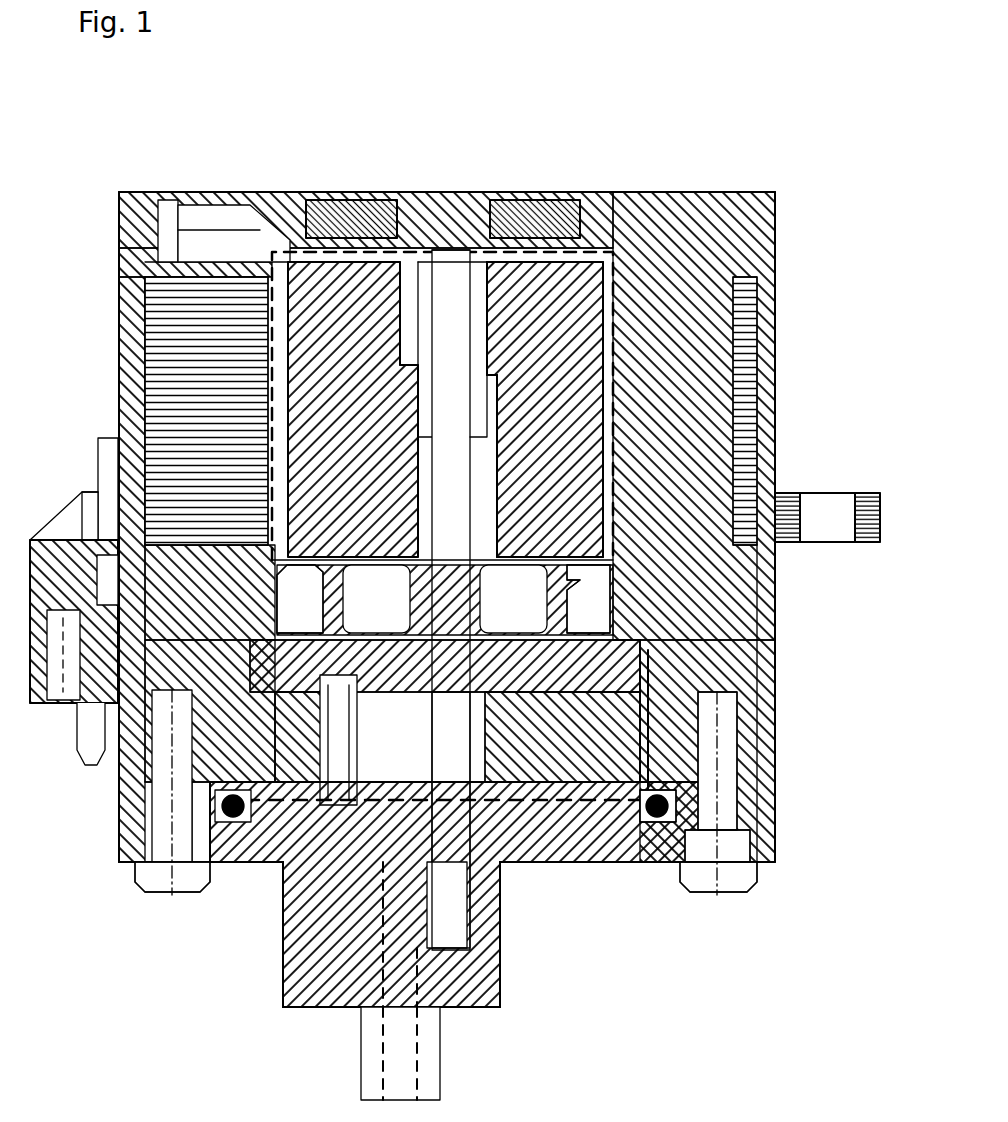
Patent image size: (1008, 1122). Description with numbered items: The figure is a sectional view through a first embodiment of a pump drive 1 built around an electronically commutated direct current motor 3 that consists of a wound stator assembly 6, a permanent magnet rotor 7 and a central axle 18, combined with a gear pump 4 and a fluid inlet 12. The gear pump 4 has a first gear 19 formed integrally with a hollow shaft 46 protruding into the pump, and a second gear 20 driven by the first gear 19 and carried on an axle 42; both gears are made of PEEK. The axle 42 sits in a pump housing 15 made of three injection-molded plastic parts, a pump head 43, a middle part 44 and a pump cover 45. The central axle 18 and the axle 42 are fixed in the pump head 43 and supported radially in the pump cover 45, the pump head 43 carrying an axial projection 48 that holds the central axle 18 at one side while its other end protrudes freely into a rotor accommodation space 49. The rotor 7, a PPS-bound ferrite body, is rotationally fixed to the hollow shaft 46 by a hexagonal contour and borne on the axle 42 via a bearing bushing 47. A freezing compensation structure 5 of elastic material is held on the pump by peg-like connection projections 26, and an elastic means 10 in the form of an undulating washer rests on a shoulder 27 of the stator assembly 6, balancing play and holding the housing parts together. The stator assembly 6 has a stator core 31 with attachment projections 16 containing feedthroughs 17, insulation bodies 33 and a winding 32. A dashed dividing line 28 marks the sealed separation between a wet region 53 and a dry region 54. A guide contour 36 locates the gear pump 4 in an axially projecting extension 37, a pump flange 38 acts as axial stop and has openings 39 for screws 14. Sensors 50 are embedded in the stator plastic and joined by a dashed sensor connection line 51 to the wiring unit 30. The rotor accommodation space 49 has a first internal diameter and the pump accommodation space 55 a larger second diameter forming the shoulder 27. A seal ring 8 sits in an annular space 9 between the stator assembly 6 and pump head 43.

The pump drive 1 is at (714, 80).
The electronically commutated direct current motor 3 is at (780, 350).
The gear pump 4 is at (605, 872).
The freezing compensation structure 5 is at (442, 597).
The wound stator assembly 6 is at (120, 302).
The permanent magnet rotor 7 is at (445, 409).
The seal ring 8 is at (660, 818).
The annular space 9 is at (700, 818).
The elastic means 10 is at (775, 637).
The fluid inlet 12 is at (360, 1085).
The screws 14 is at (292, 196).
The pump housing 15 is at (256, 876).
The attachment projections 16 is at (866, 512).
The feedthrough 17 is at (830, 512).
The central axle 18 is at (444, 362).
The first gear 19 is at (482, 748).
The second gear 20 is at (300, 745).
The connection projections 26 is at (240, 612).
The shoulder 27 is at (105, 735).
The dividing line 28 is at (295, 965).
The wiring unit 30 is at (70, 552).
The stator core 31 is at (185, 385).
The winding 32 is at (216, 200).
The insulation bodies 33 is at (162, 195).
The guide contour 36 is at (640, 760).
The axially projecting extension 37 is at (740, 792).
The pump flange 38 is at (760, 850).
The openings 39 is at (160, 882).
The axle 42 is at (300, 850).
The pump head 43 is at (570, 868).
The middle part 44 is at (457, 737).
The pump cover 45 is at (445, 666).
The hollow shaft 46 is at (490, 515).
The bearing bushing 47 is at (410, 318).
The axial projection 48 is at (500, 995).
The rotor accommodation space 49 is at (455, 260).
The sensors 50 is at (352, 198).
The sensor connection line 51 is at (120, 241).
The wet region 53 is at (612, 302).
The dry region 54 is at (722, 1002).
The pump accommodation space 55 is at (625, 800).